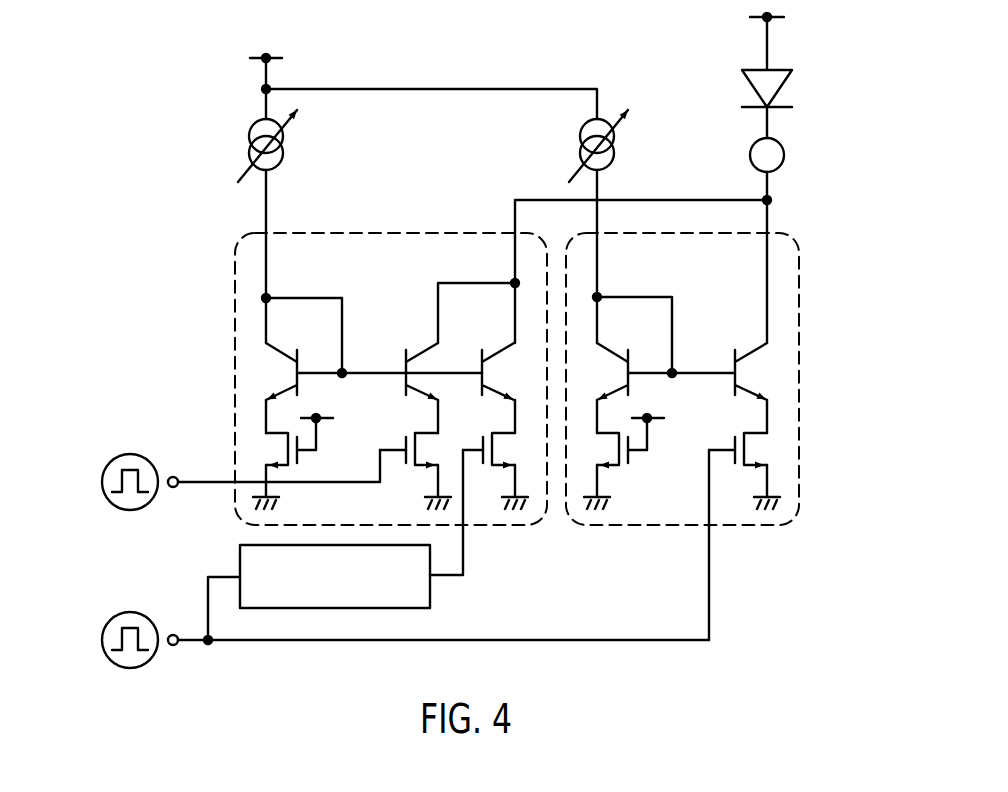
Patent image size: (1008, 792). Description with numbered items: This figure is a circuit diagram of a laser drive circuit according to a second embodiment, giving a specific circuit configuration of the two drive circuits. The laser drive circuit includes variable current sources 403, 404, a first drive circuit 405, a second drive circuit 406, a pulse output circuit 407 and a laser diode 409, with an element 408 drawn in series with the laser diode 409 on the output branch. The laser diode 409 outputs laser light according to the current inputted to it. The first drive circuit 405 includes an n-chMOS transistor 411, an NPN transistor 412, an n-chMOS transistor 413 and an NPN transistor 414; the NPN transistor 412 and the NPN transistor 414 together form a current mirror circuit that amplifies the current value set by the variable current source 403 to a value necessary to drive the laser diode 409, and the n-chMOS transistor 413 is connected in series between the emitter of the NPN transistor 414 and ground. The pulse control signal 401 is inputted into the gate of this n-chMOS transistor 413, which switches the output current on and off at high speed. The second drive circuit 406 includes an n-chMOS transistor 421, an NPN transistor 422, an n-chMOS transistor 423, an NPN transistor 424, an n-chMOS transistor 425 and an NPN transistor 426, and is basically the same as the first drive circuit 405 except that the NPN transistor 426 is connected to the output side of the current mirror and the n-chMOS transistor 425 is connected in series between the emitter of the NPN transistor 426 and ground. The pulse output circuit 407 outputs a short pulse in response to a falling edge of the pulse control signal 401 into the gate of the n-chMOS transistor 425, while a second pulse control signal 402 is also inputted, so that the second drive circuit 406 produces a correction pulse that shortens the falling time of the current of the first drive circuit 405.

The pulse control signal 401 is at (102, 641).
The pulse control signal 402 is at (102, 483).
The variable current source 403 is at (581, 141).
The variable current source 404 is at (250, 141).
The first drive circuit 405 is at (800, 312).
The second drive circuit 406 is at (236, 290).
The pulse output circuit 407 is at (430, 594).
The light emitting element (laser diode) 408 is at (784, 155).
The laser diode 409 is at (782, 92).
The n-chMOS transistor 411 is at (622, 470).
The NPN transistor 412 is at (637, 383).
The n-chMOS transistor 413 is at (780, 450).
The NPN transistor 414 is at (780, 370).
The n-chMOS transistor 421 is at (267, 449).
The NPN transistor 422 is at (268, 373).
The n-chMOS transistor 423 is at (428, 448).
The NPN transistor 424 is at (418, 342).
The n-chMOS transistor 425 is at (510, 448).
The NPN transistor 426 is at (495, 342).